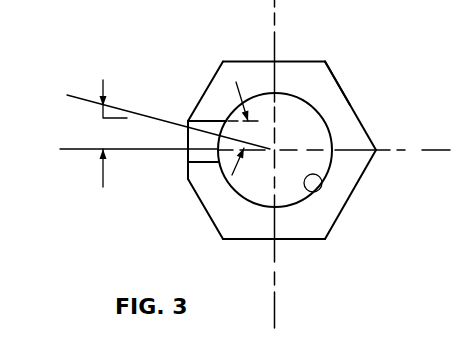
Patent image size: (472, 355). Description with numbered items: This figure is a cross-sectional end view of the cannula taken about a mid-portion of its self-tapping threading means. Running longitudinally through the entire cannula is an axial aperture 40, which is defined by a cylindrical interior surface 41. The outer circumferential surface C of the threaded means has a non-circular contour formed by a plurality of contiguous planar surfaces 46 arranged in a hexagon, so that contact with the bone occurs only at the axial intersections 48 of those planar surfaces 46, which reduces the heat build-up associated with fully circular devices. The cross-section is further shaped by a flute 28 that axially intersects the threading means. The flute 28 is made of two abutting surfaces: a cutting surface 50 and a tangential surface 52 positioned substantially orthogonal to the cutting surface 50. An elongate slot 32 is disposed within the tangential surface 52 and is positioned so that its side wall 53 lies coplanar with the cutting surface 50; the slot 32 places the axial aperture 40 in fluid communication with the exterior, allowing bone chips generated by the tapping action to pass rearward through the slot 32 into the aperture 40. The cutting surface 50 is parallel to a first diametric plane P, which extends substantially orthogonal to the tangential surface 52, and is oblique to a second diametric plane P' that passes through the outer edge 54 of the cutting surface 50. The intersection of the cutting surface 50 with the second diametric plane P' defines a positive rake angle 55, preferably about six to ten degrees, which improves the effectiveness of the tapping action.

The flute 28 is at (129, 193).
The elongate slot 32 is at (186, 154).
The axial aperture 40 is at (310, 133).
The cylindrical interior surface 41 is at (321, 177).
The contiguous planar surfaces 46 is at (304, 62).
The axial intersections 48 is at (223, 62).
The cutting surface 50 is at (184, 122).
The tangential surface 52 is at (186, 168).
The side wall 53 is at (210, 112).
The outer edge 54 is at (158, 119).
The positive rake angle 55 is at (240, 118).
The circumferential surface C is at (342, 76).
The first diametric plane P is at (139, 134).
The second diametric plane P' is at (164, 110).